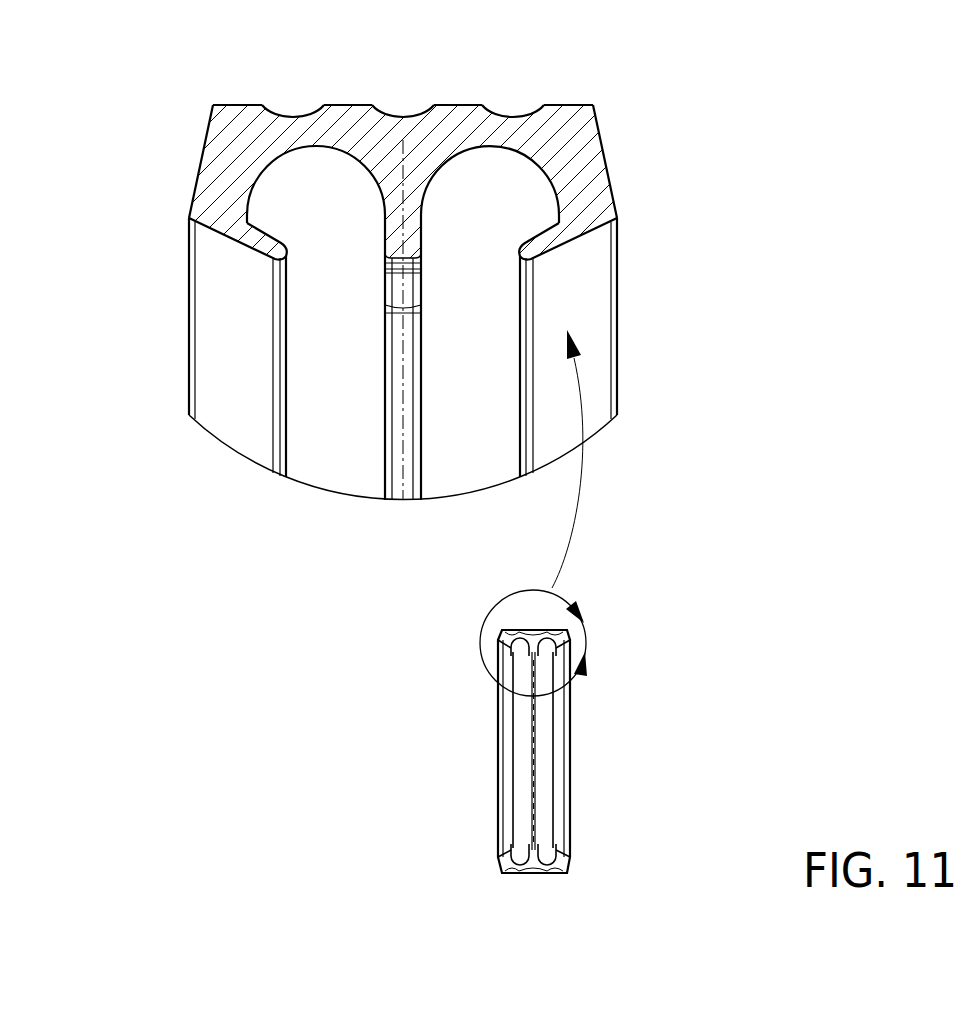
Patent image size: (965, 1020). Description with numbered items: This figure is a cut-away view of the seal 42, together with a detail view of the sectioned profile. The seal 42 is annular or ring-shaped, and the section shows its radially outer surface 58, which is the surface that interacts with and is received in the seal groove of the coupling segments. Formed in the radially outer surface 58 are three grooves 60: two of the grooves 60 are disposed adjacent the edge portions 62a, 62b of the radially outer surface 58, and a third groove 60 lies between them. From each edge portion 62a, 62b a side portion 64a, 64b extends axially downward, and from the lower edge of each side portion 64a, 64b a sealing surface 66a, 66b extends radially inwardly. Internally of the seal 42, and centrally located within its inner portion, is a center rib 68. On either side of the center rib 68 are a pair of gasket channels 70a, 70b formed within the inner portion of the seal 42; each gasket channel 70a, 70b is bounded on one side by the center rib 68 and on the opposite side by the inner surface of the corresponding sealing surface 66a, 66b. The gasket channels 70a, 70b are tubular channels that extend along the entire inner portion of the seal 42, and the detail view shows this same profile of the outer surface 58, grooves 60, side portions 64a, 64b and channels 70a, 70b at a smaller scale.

The seal 42 is at (665, 753).
The radially outer surface 58 is at (337, 105).
The groove 60 is at (400, 117).
The edge portion 62a is at (213, 107).
The edge portion 62b is at (592, 108).
The side portion 64a is at (197, 178).
The side portion 64b is at (610, 187).
The sealing surface 66a is at (205, 342).
The sealing surface 66b is at (595, 385).
The center rib 68 is at (403, 483).
The gasket channel 70a is at (313, 465).
The gasket channel 70b is at (474, 462).